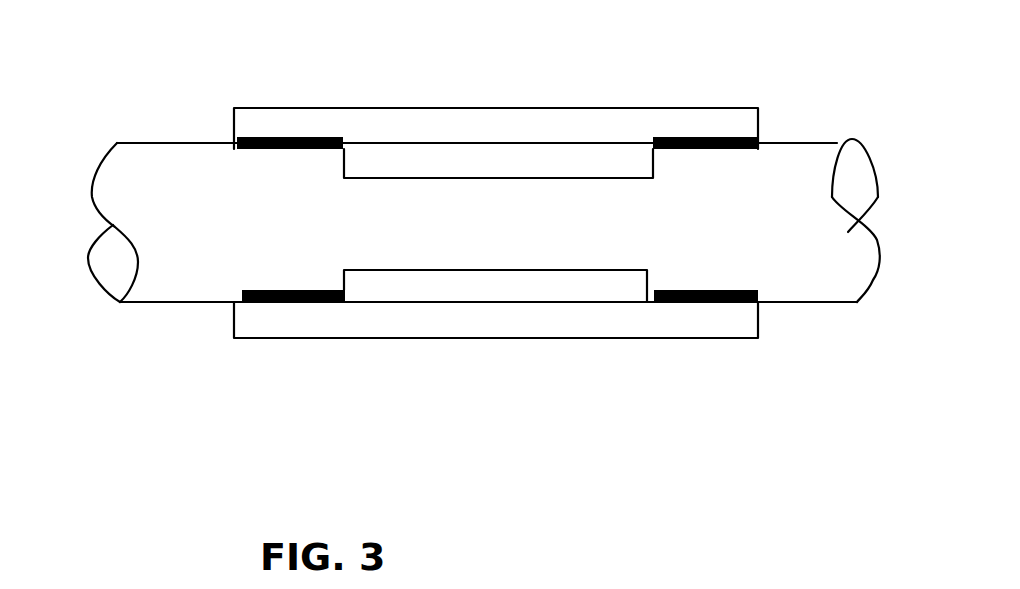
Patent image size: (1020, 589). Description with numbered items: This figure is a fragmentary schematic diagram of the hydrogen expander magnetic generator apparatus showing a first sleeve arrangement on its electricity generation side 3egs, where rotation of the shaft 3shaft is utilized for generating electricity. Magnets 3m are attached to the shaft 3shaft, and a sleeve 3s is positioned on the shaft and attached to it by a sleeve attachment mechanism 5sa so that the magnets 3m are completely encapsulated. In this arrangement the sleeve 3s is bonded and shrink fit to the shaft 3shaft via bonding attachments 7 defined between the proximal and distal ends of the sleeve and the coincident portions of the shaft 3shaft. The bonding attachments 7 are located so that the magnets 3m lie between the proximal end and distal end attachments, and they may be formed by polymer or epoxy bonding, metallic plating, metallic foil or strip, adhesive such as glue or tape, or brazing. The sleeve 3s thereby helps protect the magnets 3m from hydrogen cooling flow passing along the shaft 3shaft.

The shaft 3shaft is at (157, 278).
The electricity generation side 3egs is at (528, 242).
The sleeve 3s is at (729, 306).
The magnets 3m is at (641, 170).
The bonding attachments 7 is at (305, 132).
The sleeve attachment mechanism 5sa is at (657, 132).